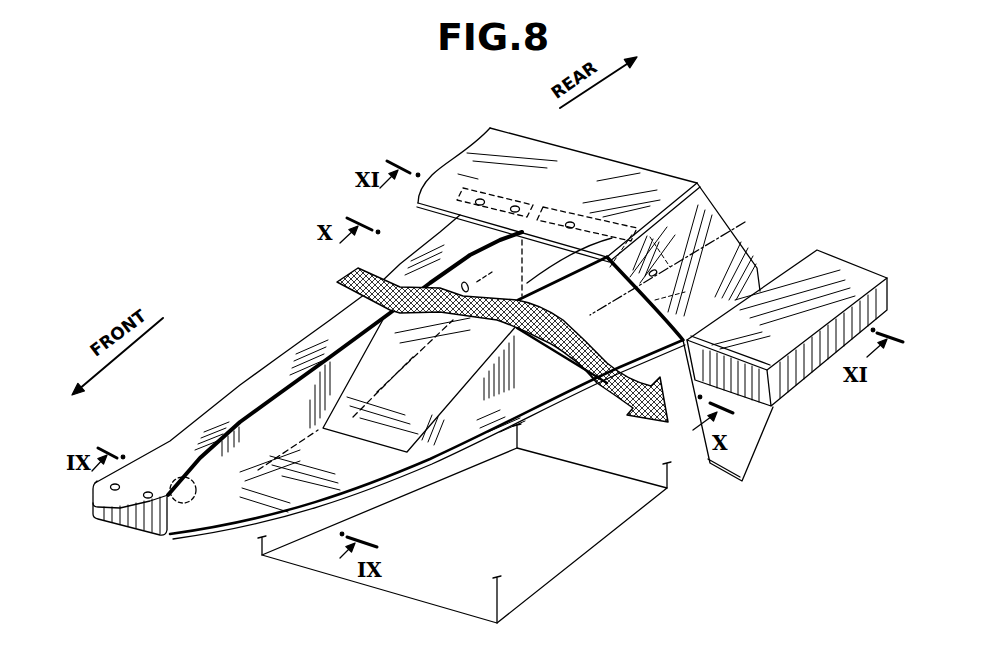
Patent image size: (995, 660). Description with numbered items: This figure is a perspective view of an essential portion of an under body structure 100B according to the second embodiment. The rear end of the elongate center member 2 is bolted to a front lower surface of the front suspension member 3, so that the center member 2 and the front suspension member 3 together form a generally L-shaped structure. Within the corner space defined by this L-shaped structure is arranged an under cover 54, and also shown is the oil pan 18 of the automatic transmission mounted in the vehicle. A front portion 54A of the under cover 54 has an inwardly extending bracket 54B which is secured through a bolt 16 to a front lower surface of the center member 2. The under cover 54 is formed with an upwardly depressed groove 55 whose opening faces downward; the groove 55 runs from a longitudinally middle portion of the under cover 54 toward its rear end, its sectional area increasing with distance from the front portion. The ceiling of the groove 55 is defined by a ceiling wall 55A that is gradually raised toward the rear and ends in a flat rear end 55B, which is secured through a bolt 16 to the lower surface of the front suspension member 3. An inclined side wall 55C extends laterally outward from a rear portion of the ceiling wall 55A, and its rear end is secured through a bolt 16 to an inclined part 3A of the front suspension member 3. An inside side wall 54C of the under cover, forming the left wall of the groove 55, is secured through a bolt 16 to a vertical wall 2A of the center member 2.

The center member 2 is at (261, 369).
The vertical wall 2A is at (491, 276).
The front suspension member 3 is at (655, 186).
The inclined part 3A is at (752, 262).
The bolt 16 is at (681, 263).
The oil pan 18 is at (645, 515).
The under cover 54 is at (328, 482).
The front portion 54A is at (248, 507).
The bracket 54B is at (178, 506).
The inside side wall 54C is at (605, 205).
The groove 55 is at (397, 355).
The ceiling wall 55A is at (433, 402).
The flat rear end 55B is at (546, 275).
The inclined side wall 55C is at (592, 304).
The under body structure 100B is at (617, 135).